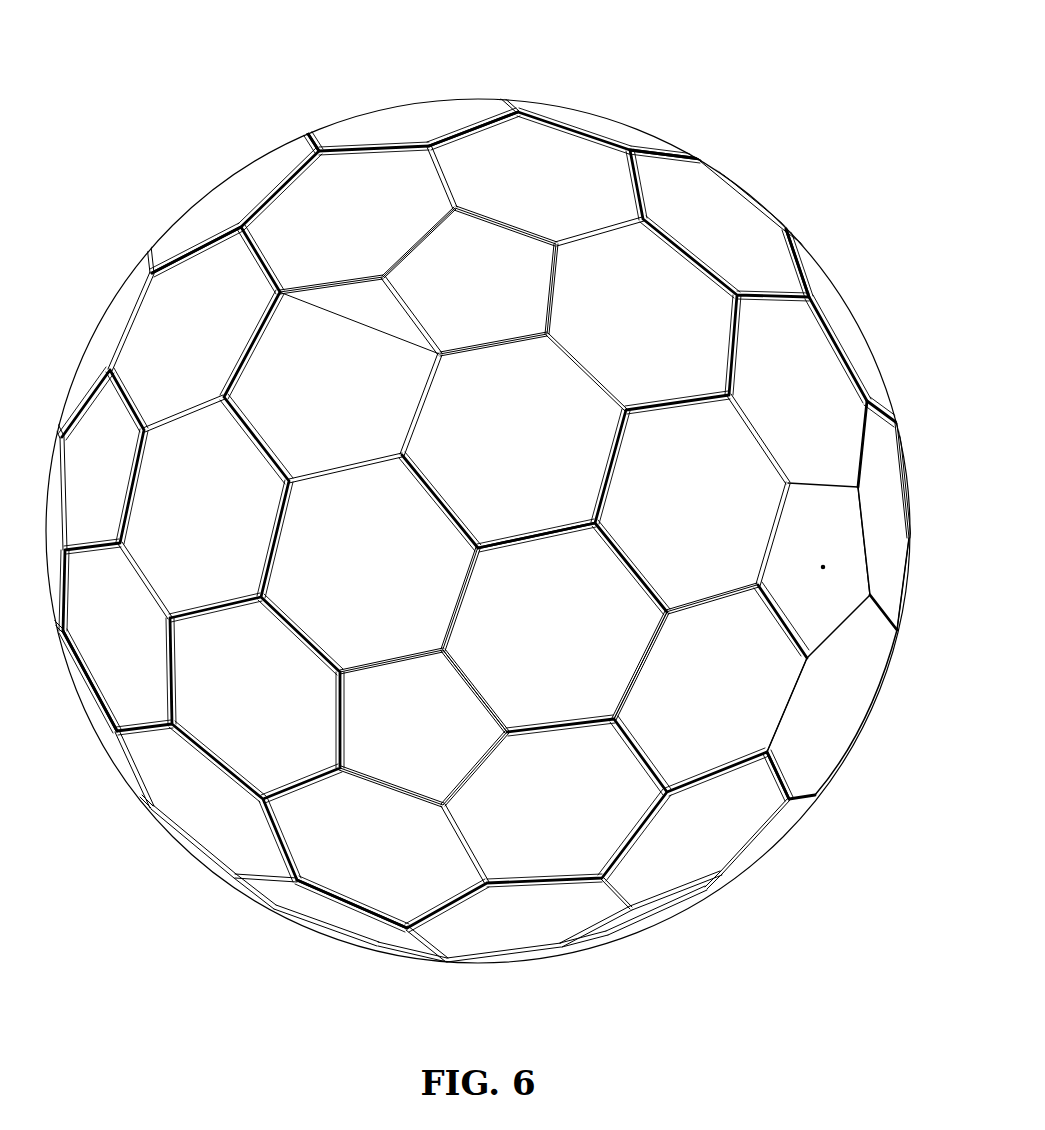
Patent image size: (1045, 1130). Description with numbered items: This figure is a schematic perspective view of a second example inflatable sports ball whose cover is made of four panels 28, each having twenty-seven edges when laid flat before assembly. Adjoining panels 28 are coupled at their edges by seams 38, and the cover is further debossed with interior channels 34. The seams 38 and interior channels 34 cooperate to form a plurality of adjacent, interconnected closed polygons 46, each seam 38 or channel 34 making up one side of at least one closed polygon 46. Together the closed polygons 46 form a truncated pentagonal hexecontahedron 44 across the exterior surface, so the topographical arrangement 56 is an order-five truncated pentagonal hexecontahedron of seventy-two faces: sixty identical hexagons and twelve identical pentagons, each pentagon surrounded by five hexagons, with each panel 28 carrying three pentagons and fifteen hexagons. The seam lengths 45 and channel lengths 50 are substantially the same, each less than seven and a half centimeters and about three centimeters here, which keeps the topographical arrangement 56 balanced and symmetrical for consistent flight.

The topographical arrangement 56 is at (733, 70).
The seam length 45 is at (360, 148).
The channel length 50 is at (417, 247).
The seam 38 is at (372, 150).
The interior channel 34 is at (470, 180).
The closed polygon 46 is at (795, 403).
The panel 28 is at (558, 560).
The truncated pentagonal hexecontahedron 44 is at (535, 106).